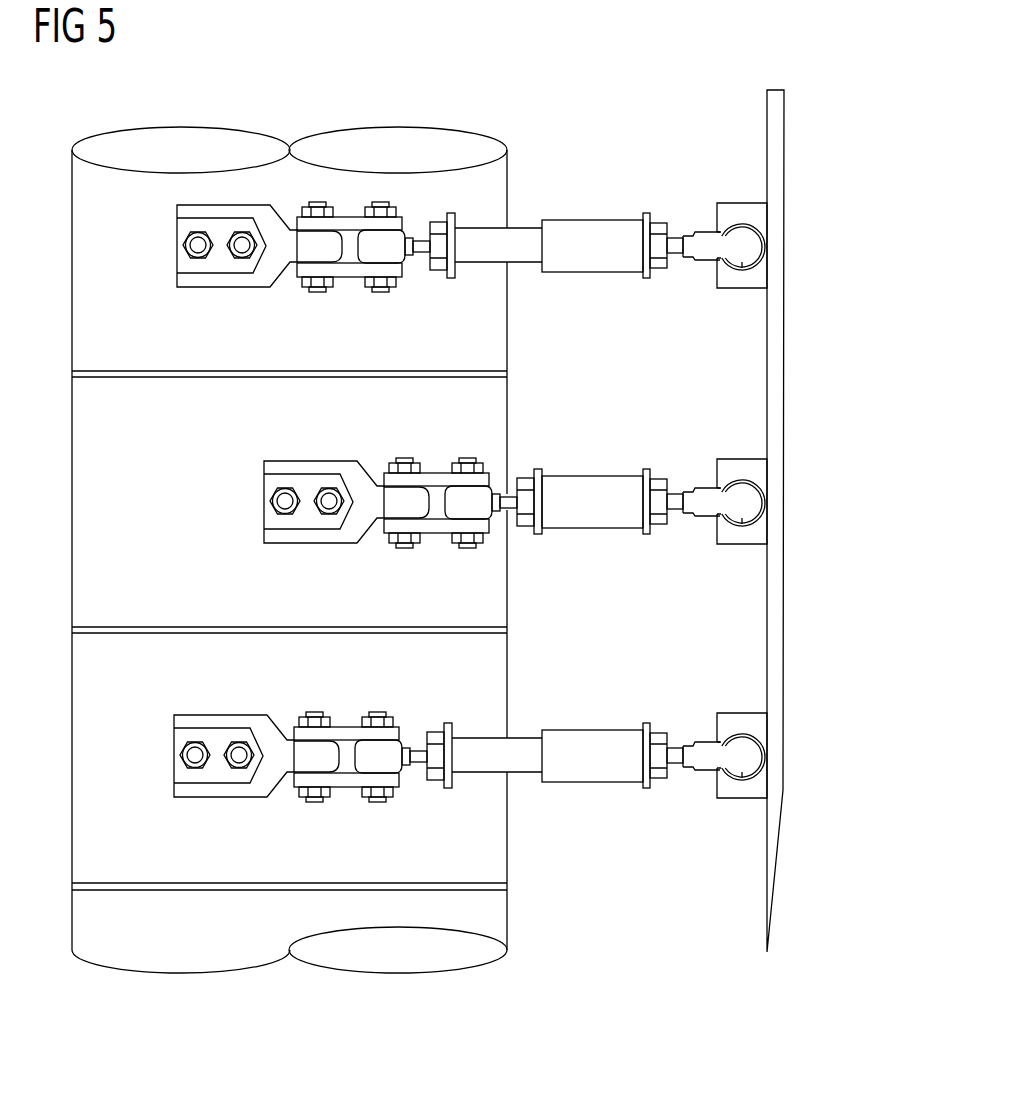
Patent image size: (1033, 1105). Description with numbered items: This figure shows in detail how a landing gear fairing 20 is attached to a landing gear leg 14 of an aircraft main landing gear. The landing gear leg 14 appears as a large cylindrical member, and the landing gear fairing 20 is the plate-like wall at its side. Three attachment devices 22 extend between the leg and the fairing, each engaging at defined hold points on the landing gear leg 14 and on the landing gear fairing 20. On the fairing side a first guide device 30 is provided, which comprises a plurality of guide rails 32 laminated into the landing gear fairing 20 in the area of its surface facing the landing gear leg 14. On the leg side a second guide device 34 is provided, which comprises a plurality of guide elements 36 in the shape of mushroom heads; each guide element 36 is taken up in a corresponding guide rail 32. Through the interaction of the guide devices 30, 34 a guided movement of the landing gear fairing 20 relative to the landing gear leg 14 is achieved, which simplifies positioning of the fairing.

The landing gear leg 14 is at (90, 495).
The landing gear fairing 20 is at (776, 353).
The attachment device 22 is at (591, 236).
The first guide device 30 is at (800, 226).
The guide rail 32 is at (722, 204).
The second guide device 34 is at (686, 876).
The guide element 36 is at (742, 270).